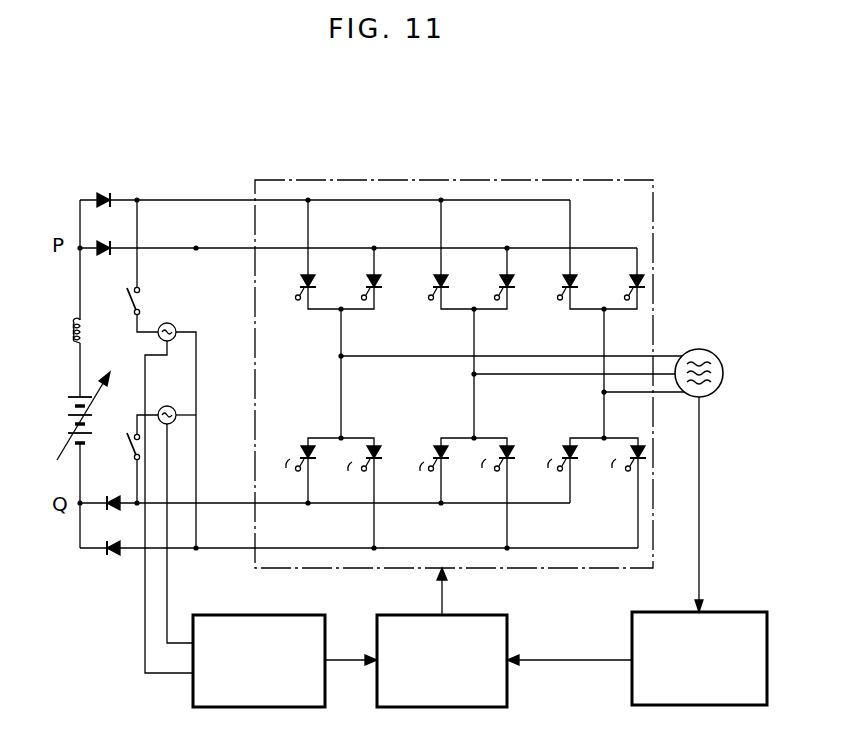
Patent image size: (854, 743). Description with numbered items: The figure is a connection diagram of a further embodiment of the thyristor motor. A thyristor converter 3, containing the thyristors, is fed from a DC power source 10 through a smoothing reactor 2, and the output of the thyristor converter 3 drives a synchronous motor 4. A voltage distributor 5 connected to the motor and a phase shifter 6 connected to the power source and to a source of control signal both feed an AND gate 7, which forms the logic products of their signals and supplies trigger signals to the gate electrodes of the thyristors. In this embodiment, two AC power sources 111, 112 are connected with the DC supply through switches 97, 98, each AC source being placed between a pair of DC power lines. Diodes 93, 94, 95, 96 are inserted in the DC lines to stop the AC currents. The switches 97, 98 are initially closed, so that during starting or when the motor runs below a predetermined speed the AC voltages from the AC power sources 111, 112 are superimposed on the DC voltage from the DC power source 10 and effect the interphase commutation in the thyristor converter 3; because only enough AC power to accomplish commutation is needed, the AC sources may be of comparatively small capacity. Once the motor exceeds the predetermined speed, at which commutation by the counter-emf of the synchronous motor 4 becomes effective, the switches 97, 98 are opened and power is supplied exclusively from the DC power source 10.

The smoothing reactor 2 is at (105, 320).
The thyristor converter 3 is at (400, 181).
The synchronous motor 4 is at (703, 345).
The voltage distributor 5 is at (713, 612).
The phase shifter 6 is at (225, 615).
The AND gate 7 is at (448, 615).
The DC power source 10 is at (72, 392).
The diode 93 is at (111, 195).
The diode 94 is at (103, 245).
The diode 95 is at (113, 559).
The diode 96 is at (112, 510).
The switch 97 is at (133, 301).
The switch 98 is at (128, 446).
The AC power source 111 is at (172, 340).
The AC power source 112 is at (183, 400).